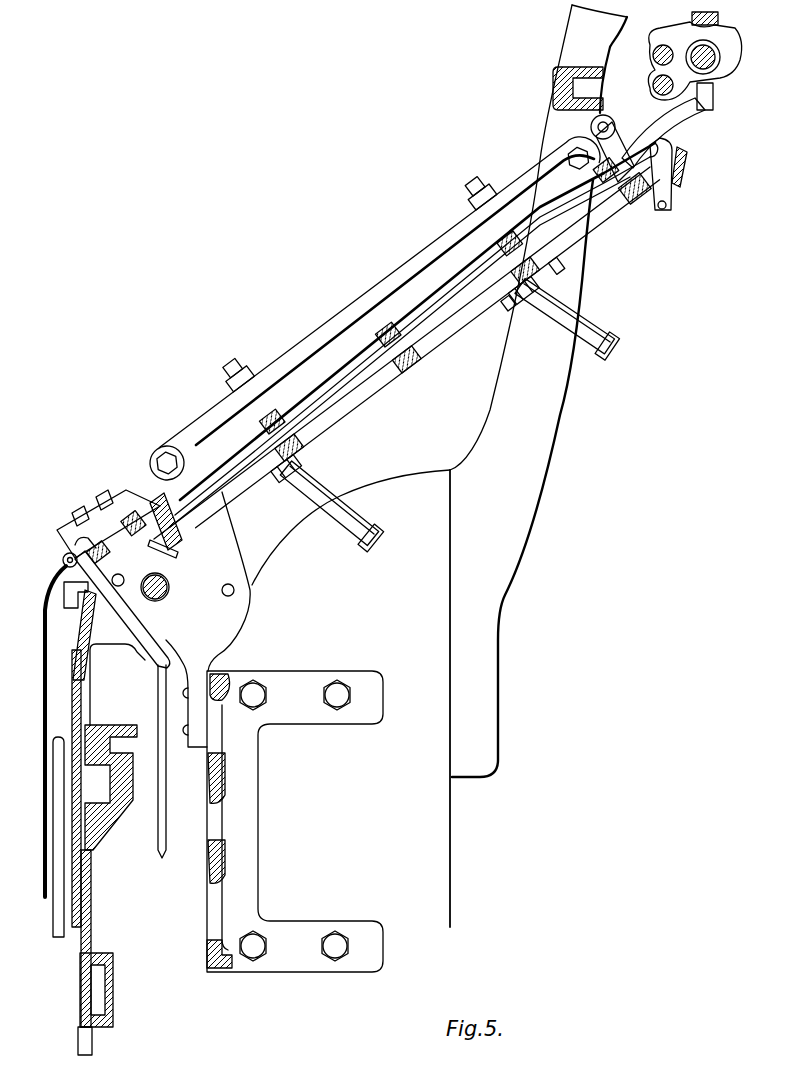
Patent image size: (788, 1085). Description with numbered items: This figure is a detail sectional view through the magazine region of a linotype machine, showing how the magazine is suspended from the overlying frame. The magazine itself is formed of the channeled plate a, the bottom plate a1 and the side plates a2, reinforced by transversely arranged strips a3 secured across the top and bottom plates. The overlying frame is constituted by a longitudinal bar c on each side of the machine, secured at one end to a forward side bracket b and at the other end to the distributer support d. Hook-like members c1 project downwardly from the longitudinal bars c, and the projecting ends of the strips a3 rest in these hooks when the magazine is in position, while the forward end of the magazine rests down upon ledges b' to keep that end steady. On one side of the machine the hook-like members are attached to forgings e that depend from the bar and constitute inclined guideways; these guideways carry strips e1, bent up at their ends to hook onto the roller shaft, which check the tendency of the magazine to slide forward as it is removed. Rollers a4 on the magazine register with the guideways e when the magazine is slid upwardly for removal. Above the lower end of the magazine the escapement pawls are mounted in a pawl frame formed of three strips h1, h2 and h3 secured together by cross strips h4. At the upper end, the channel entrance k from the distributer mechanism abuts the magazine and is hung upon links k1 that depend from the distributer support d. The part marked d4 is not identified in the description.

The carriage rail bar a is at (229, 472).
The lower rail plate a1 is at (232, 488).
The rail strip a2 is at (563, 223).
The spacing blocks a3 is at (527, 272).
The slider bracket a4 is at (292, 478).
The side plate b is at (208, 619).
The plate lug b' is at (179, 537).
The upper guide bar c is at (318, 348).
The bar clip c1 is at (556, 265).
The frame standard d is at (572, 58).
The frame bracket d4 is at (512, 294).
The slide rod e is at (333, 490).
The slide rod cap e1 is at (372, 532).
The clamp bolt h1 is at (147, 600).
The clamp block h2 is at (169, 578).
The clamp lever h3 is at (152, 546).
The clamp plate h4 is at (126, 518).
The lever arm k is at (678, 174).
The lever pivot link k1 is at (652, 106).